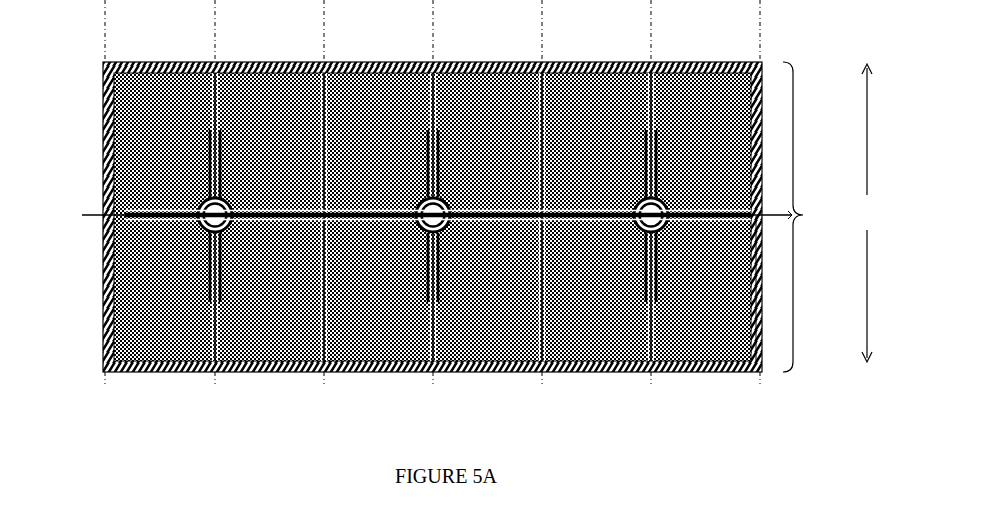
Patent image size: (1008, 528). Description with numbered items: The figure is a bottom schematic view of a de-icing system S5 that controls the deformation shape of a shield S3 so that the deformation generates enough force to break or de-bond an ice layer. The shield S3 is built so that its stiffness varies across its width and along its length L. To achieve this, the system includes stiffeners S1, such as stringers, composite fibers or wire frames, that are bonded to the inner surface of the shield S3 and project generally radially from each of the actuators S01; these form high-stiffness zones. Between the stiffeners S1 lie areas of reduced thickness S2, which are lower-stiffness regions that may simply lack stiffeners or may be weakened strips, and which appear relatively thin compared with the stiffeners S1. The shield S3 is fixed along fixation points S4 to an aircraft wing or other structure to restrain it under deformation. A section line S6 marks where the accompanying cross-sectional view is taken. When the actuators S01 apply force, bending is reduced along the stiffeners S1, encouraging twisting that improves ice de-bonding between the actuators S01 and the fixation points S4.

The stiffener S1 is at (210, 138).
The actuator S01 is at (205, 200).
The area of reduced thickness S2 is at (103, 190).
The shield S3 is at (187, 272).
The fixation point S4 is at (546, 211).
The de-icing system S5 is at (808, 217).
The section line S6 is at (767, 218).
The length L is at (867, 213).